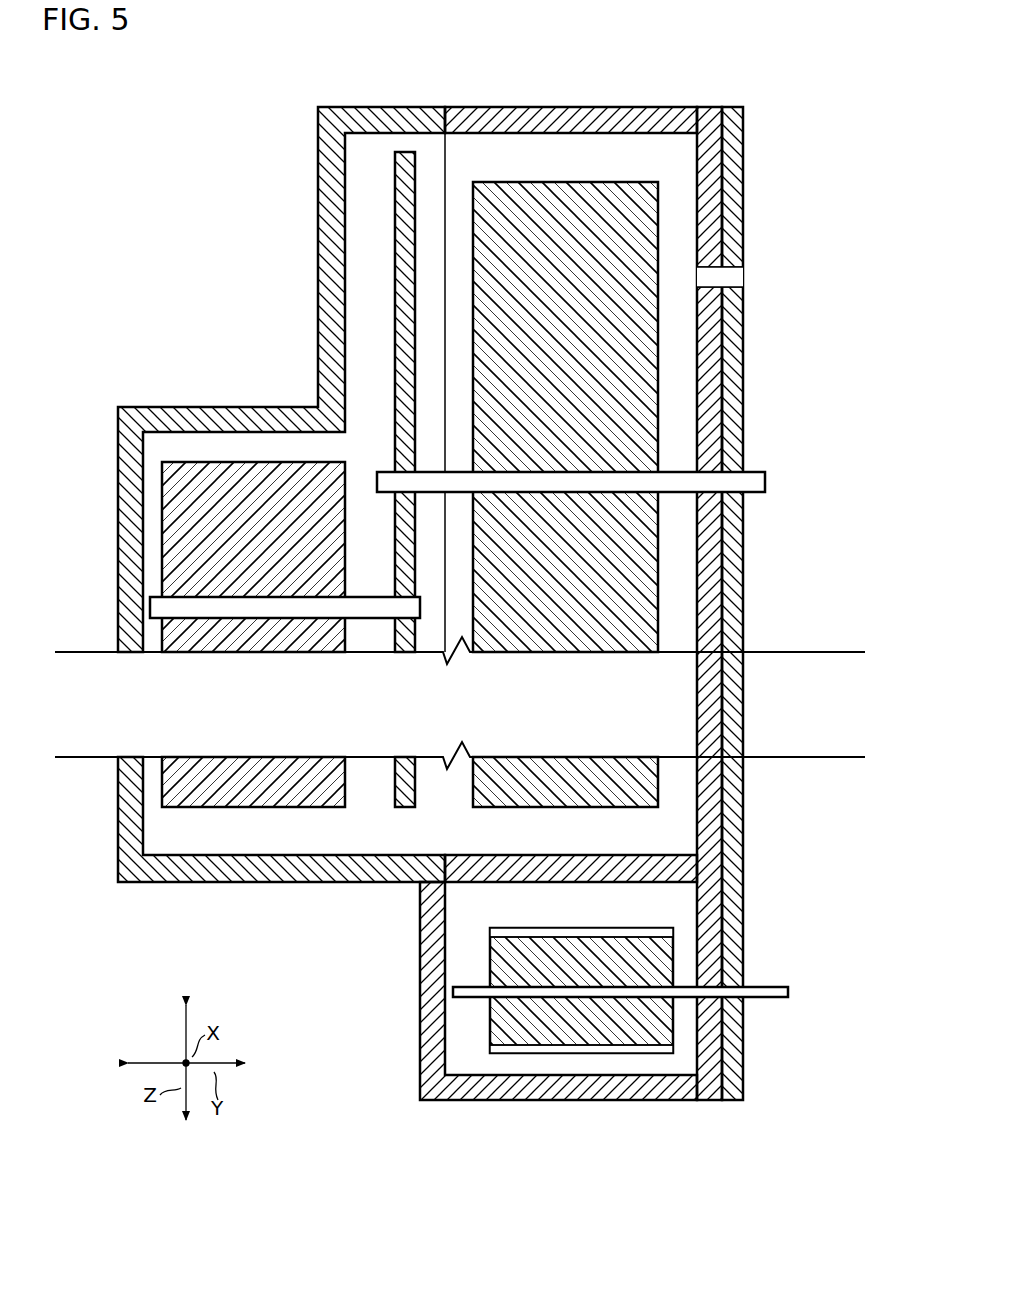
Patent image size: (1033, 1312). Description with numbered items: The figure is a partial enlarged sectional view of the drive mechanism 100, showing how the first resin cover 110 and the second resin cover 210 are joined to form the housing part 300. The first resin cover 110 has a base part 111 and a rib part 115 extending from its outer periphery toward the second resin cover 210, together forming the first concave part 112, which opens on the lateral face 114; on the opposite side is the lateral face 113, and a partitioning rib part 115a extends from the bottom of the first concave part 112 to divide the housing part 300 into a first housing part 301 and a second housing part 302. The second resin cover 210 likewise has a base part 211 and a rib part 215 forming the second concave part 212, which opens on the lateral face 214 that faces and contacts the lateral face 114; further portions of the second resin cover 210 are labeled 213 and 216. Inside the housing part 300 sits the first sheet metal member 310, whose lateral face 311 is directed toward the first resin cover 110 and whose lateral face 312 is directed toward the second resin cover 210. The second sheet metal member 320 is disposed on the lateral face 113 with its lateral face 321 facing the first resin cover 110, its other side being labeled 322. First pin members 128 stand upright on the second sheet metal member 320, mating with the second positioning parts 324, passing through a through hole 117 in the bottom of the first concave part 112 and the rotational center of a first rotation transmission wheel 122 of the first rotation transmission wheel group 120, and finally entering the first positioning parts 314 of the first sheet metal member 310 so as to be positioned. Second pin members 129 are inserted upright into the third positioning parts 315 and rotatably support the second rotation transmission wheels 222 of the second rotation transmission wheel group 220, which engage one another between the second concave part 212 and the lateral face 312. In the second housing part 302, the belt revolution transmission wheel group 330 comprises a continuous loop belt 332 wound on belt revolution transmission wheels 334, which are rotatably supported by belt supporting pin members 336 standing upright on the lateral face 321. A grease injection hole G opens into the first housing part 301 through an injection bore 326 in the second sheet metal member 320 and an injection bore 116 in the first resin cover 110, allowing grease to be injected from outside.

The drive mechanism 100 is at (266, 111).
The first resin cover 110 is at (575, 450).
The base part 111 is at (722, 435).
The first concave part 112 is at (690, 165).
The lateral face 113 is at (748, 175).
The lateral face 114 is at (430, 110).
The rib part 115 is at (585, 110).
The partitioning rib part 115a is at (672, 860).
The injection bore 116 is at (712, 272).
The through hole 117 is at (680, 490).
The first rotation transmission wheel group 120 is at (662, 190).
The first rotation transmission wheels 122 is at (705, 260).
The first pin members 128 is at (646, 494).
The second pin members 129 is at (205, 620).
The second resin cover 210 is at (286, 464).
The base part 211 is at (325, 355).
The second concave part 212 is at (305, 442).
The outer wall 213 is at (118, 465).
The lateral face 214 is at (445, 115).
The rib part 215 is at (370, 112).
The corner portion 216 is at (150, 430).
The second rotation transmission wheel group 220 is at (200, 575).
The second rotation transmission wheels 222 is at (215, 500).
The housing part 300 is at (486, 977).
The first housing part 301 is at (330, 890).
The second housing part 302 is at (495, 902).
The first sheet metal member 310 is at (381, 479).
The lateral face 311 is at (415, 205).
The lateral face 312 is at (400, 215).
The first positioning parts 314 is at (380, 490).
The third positioning parts 315 is at (428, 608).
The second sheet metal member 320 is at (774, 578).
The lateral face 321 is at (710, 125).
The outer wall layer 322 is at (745, 130).
The second positioning parts 324 is at (740, 478).
The injection bore 326 is at (715, 290).
The belt revolution transmission wheel group 330 is at (620, 1040).
The continuous loop belt 332 is at (528, 1047).
The belt revolution transmission wheels 334 is at (588, 1028).
The belt supporting pin members 336 is at (535, 992).
The grease injection hole G is at (830, 280).